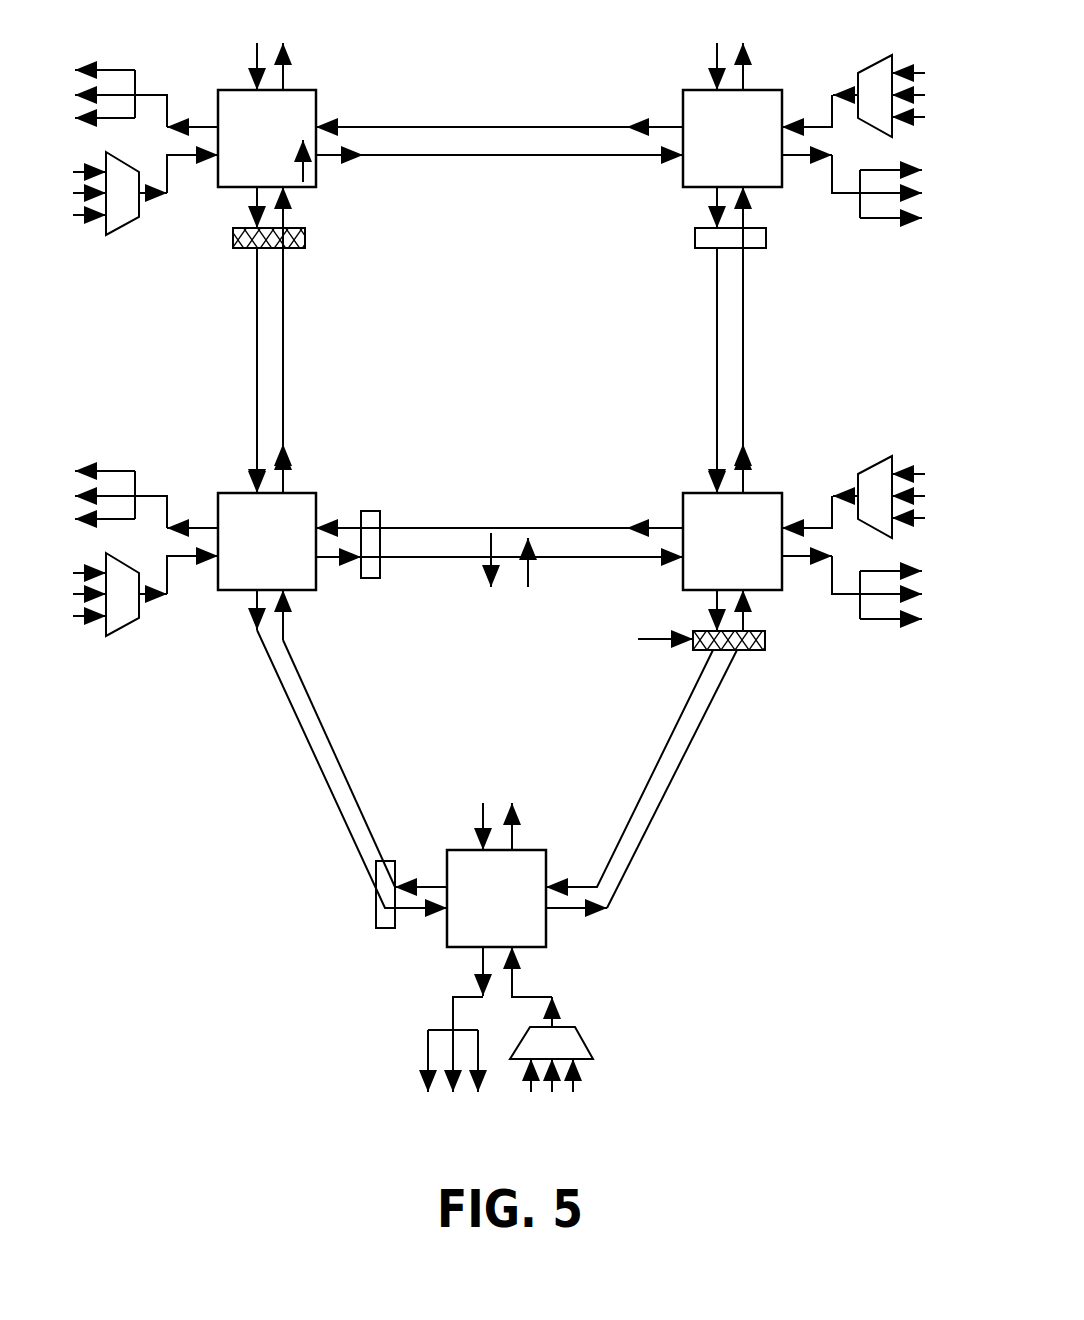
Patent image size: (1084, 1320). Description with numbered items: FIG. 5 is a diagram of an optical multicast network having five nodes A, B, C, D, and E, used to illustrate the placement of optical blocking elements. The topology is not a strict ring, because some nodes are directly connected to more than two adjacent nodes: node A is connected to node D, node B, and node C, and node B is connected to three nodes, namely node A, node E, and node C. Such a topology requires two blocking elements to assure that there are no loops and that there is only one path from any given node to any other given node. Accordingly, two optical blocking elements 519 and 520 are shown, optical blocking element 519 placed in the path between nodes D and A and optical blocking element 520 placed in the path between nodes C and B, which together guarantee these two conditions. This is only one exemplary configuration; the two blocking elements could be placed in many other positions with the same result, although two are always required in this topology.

The optical blocking element 519 is at (305, 234).
The optical blocking element 520 is at (765, 638).
The node A is at (267, 541).
The node B is at (732, 541).
The node C is at (496, 898).
The node D is at (267, 138).
The node E is at (732, 138).